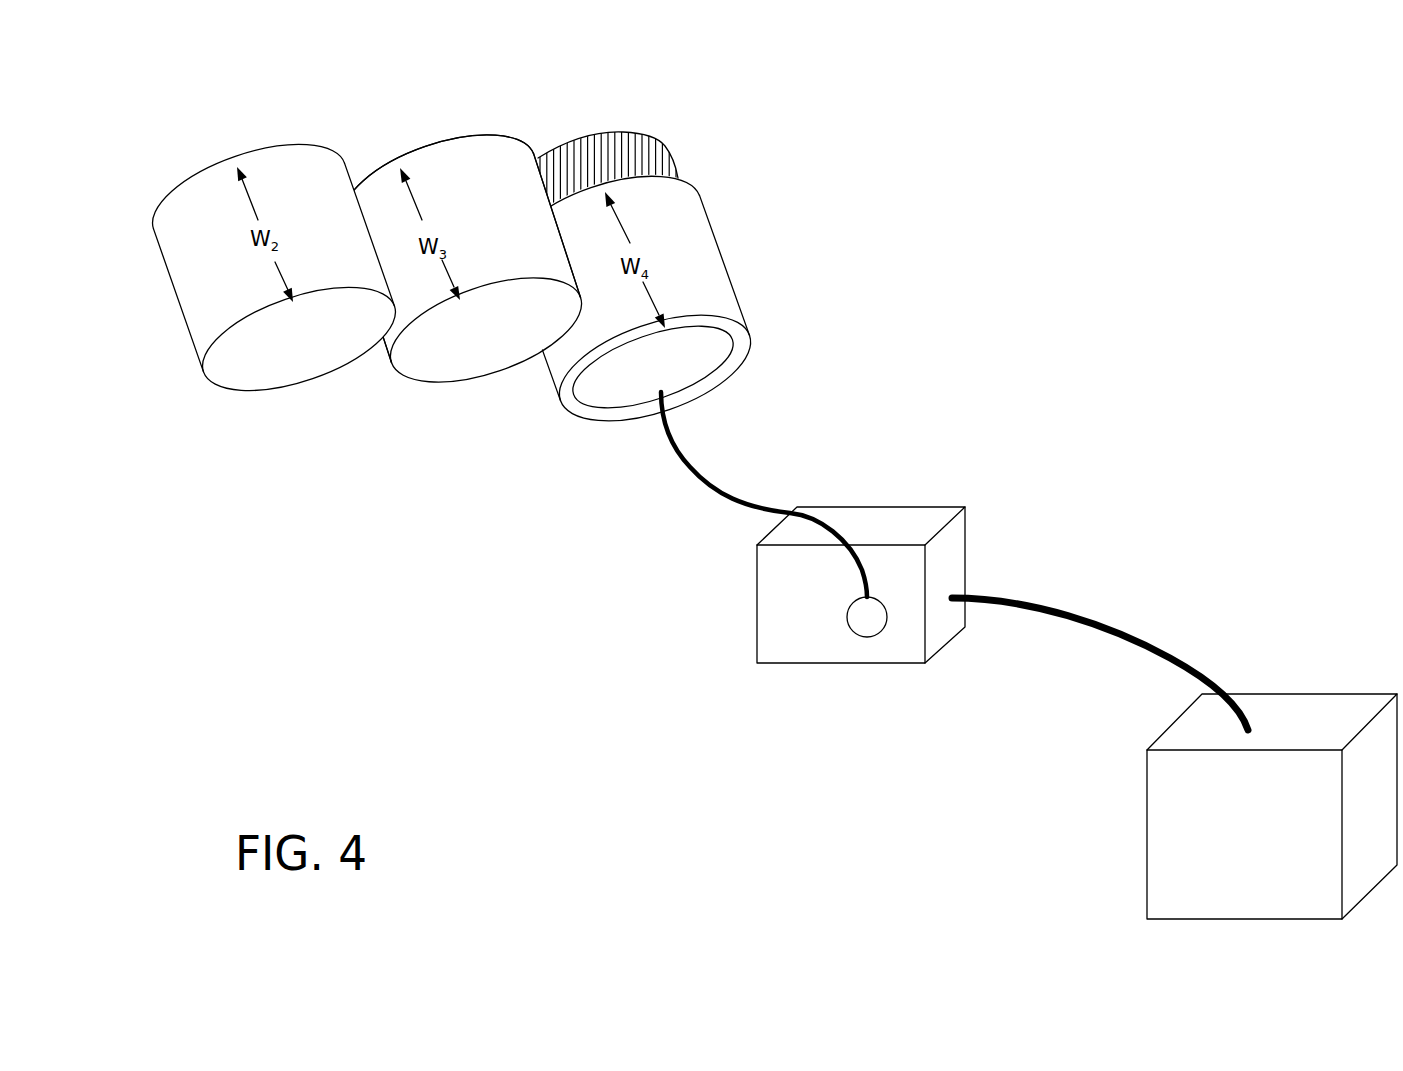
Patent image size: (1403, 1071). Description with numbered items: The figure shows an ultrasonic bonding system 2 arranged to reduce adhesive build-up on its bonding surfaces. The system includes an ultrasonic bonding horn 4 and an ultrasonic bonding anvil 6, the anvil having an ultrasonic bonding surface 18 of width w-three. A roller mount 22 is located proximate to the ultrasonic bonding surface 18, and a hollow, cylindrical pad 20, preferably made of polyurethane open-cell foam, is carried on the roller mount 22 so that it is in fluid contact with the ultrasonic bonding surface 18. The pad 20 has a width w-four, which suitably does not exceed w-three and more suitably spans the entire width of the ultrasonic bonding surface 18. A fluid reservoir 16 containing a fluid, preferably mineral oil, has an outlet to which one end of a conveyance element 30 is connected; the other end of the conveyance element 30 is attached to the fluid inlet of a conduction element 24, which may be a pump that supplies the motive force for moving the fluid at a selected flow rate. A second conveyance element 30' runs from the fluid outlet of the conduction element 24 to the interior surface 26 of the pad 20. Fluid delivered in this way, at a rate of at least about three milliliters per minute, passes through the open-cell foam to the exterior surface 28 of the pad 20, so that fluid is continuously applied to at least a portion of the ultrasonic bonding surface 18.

The ultrasonic bonding system 2 is at (1028, 149).
The ultrasonic bonding horn 4 is at (285, 357).
The ultrasonic bonding anvil 6 is at (465, 358).
The ultrasonic bonding surface 18 is at (465, 210).
The roller mount 22 is at (623, 153).
The exterior surface 28 is at (703, 273).
The hollow cylindrical pad 20 is at (740, 343).
The interior surface 26 is at (640, 378).
The conduction element 24 is at (782, 637).
The second conveyance element 30' is at (764, 494).
The conveyance element 30 is at (1100, 616).
The fluid reservoir 16 is at (1160, 798).